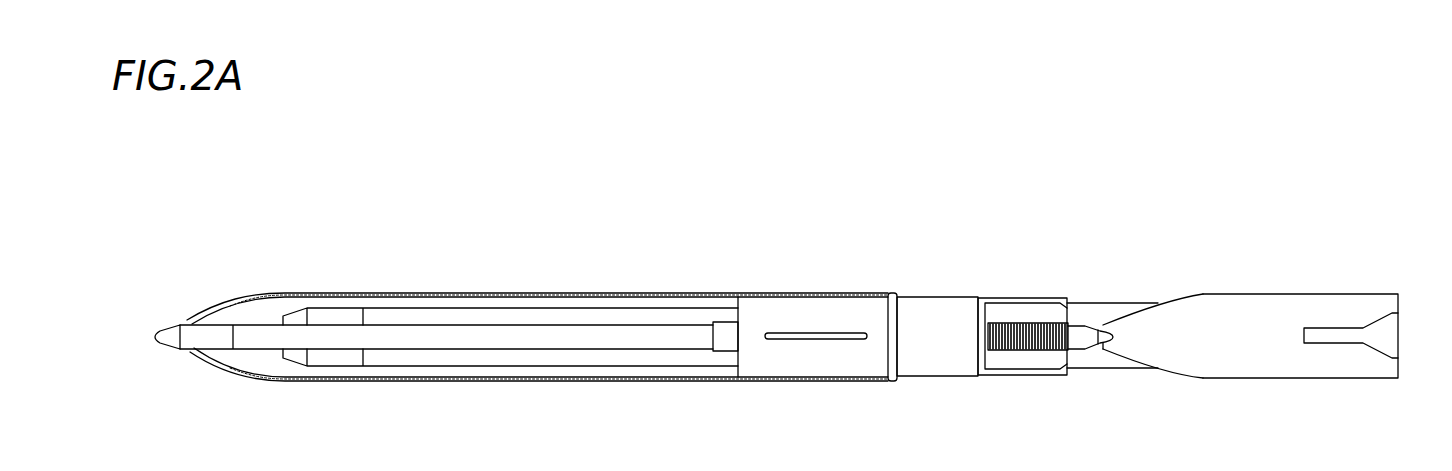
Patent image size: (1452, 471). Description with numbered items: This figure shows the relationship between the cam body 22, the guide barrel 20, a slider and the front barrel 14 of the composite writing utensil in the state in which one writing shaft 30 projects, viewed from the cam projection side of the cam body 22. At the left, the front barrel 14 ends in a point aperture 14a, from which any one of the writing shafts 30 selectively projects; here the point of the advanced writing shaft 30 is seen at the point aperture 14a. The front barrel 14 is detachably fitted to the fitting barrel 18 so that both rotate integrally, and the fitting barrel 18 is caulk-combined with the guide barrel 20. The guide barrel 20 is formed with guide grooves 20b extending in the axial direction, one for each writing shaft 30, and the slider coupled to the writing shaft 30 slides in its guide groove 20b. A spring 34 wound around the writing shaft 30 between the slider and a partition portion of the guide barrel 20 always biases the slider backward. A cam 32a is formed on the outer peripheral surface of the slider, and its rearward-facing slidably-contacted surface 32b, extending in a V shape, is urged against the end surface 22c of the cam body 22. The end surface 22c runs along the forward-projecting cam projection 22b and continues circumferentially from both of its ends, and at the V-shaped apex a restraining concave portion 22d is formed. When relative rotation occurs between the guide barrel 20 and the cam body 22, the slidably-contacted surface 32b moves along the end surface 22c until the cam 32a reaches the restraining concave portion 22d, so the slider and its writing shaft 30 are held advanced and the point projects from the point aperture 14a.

The front barrel 14 is at (617, 293).
The point aperture 14a is at (190, 352).
The writing shaft 30 is at (488, 333).
The fitting barrel 18 is at (915, 310).
The guide barrel 20 is at (1094, 310).
The guide groove 20b is at (1022, 320).
The spring 34 is at (1020, 350).
The cam 32a is at (1078, 345).
The slidably-contacted surface 32b is at (1106, 328).
The end surface 22c is at (1138, 308).
The restraining concave portion 22d is at (1106, 352).
The cam projection 22b is at (1170, 328).
The cam body 22 is at (1278, 312).